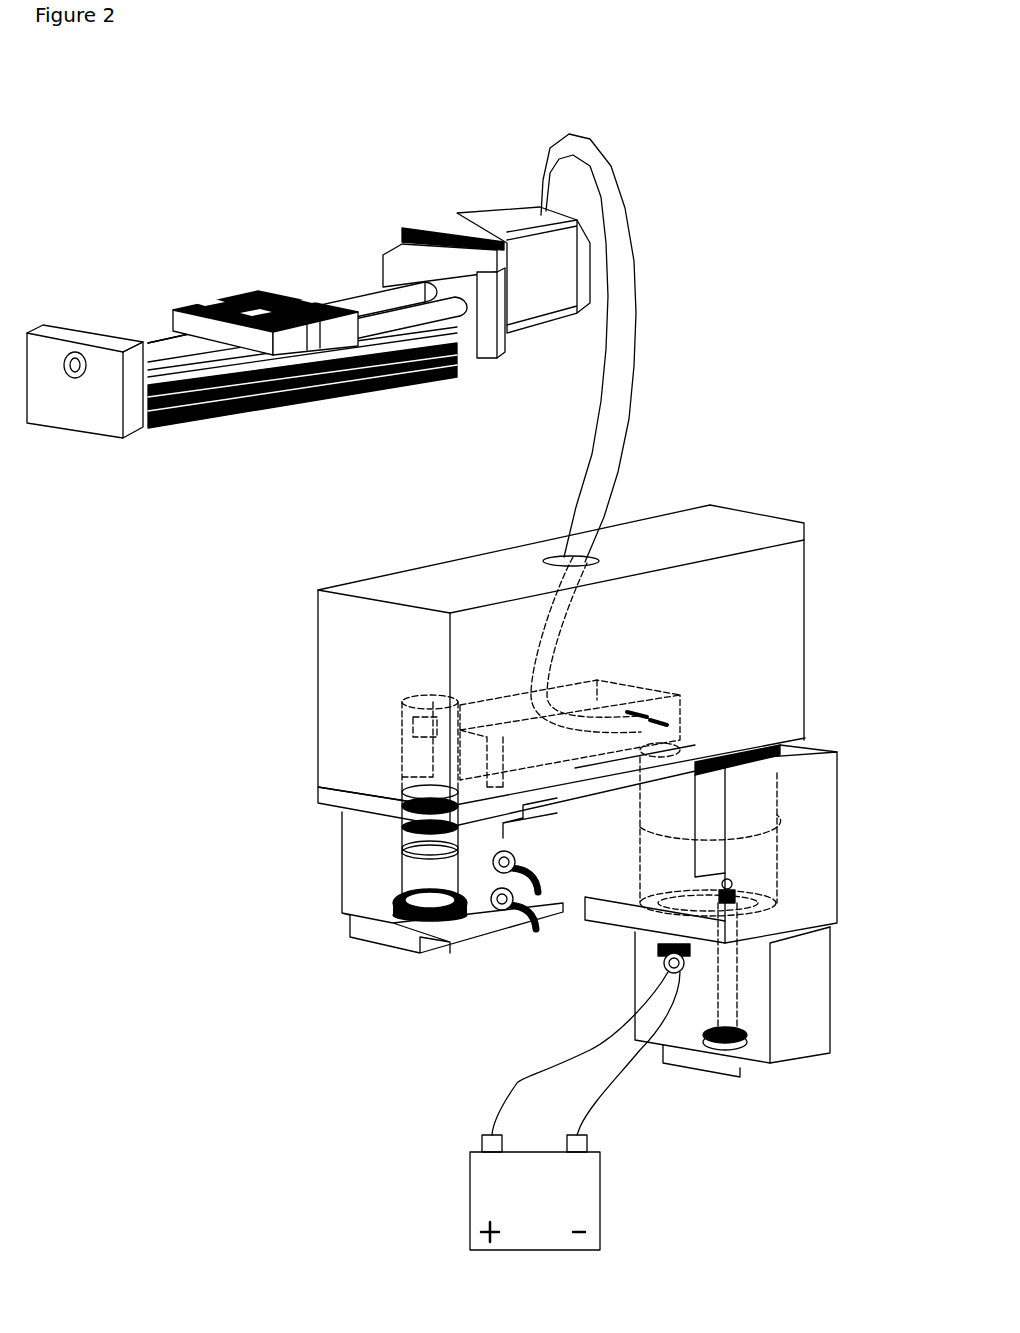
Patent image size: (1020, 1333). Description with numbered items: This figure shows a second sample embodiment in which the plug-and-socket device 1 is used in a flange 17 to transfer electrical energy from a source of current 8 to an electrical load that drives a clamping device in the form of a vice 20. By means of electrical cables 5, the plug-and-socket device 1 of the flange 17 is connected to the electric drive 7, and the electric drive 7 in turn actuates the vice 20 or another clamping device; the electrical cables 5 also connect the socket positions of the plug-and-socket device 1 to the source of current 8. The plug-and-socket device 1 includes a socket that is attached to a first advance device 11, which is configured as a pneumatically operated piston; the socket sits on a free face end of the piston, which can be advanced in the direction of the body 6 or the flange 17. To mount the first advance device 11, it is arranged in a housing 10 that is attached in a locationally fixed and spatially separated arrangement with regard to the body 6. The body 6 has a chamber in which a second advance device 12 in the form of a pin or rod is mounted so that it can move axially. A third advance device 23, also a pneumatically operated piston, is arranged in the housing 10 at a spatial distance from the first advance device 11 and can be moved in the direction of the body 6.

The plug-and-socket device 1 is at (850, 437).
The electrical cables 5 is at (603, 152).
The body 6 is at (777, 617).
The electric drive 7 is at (540, 270).
The source of current 8 is at (483, 1162).
The housing 10 is at (800, 793).
The first advance device 11 is at (783, 840).
The second advance device 12 is at (500, 690).
The flange 17 is at (283, 738).
The vice 20 is at (397, 273).
The third advance device 23 is at (390, 907).